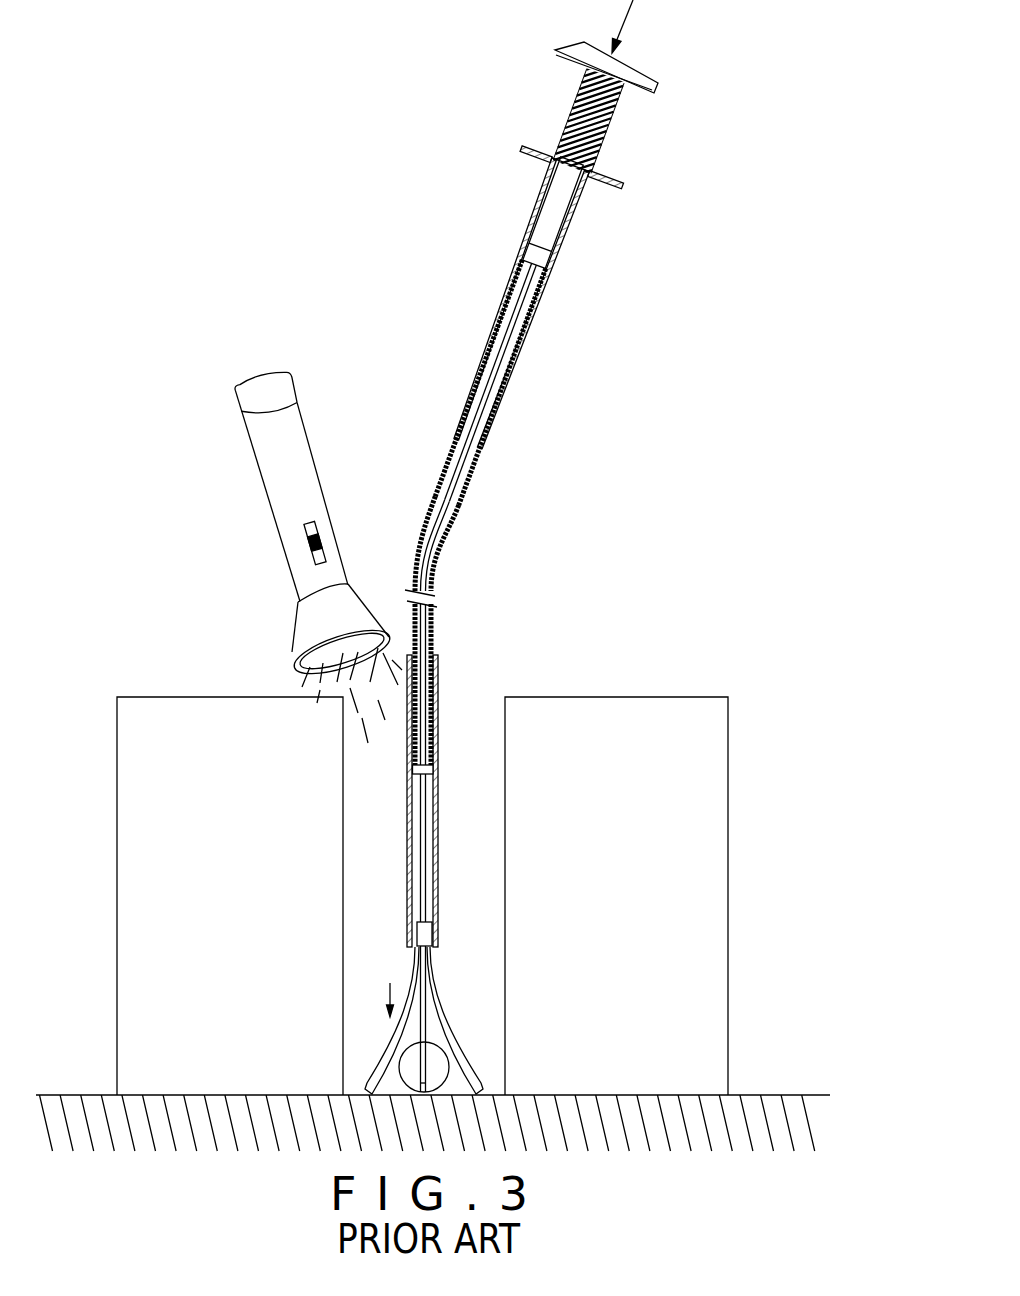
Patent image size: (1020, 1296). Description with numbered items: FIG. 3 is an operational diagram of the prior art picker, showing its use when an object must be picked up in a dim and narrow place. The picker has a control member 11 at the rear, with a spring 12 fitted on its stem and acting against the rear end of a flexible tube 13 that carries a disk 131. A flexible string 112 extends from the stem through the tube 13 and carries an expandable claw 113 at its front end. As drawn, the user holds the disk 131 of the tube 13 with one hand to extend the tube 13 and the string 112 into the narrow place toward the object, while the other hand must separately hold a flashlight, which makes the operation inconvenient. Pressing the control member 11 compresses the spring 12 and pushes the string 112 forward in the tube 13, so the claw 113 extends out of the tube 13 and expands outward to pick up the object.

The control member 11 is at (643, 78).
The spring 12 is at (604, 127).
The flexible tube 13 is at (465, 467).
The disk 131 is at (607, 186).
The flexible string 112 is at (425, 837).
The expandable claw 113 is at (442, 1004).